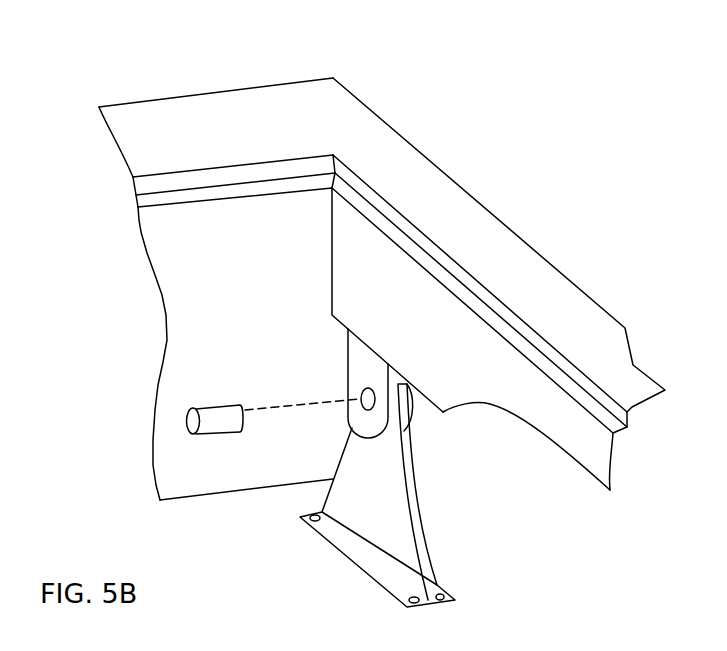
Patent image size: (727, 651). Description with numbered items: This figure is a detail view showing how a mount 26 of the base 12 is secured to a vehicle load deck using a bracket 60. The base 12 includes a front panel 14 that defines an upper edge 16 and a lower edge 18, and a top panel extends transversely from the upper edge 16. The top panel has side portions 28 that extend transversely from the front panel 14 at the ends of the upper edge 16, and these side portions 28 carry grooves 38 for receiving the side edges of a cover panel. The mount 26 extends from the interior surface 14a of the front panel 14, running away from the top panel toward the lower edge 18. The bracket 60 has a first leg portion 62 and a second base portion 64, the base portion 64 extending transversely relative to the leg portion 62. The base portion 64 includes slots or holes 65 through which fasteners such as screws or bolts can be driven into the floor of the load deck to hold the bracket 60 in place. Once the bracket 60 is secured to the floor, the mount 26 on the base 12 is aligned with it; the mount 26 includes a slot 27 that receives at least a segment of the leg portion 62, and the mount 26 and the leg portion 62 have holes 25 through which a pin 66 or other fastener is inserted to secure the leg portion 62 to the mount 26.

The base 12 is at (198, 82).
The front panel 14 is at (140, 147).
The interior surface of the front panel 14a is at (158, 250).
The upper edge 16 is at (278, 157).
The lower edge 18 is at (190, 498).
The holes 25 is at (364, 389).
The mount 26 is at (348, 352).
The slot 27 is at (406, 431).
The side portions 28 is at (452, 212).
The grooves 38 is at (537, 340).
The bracket 60 is at (424, 489).
The leg portion 62 is at (343, 457).
The base portion 64 is at (368, 568).
The holes 65 is at (312, 517).
The pin 66 is at (210, 403).